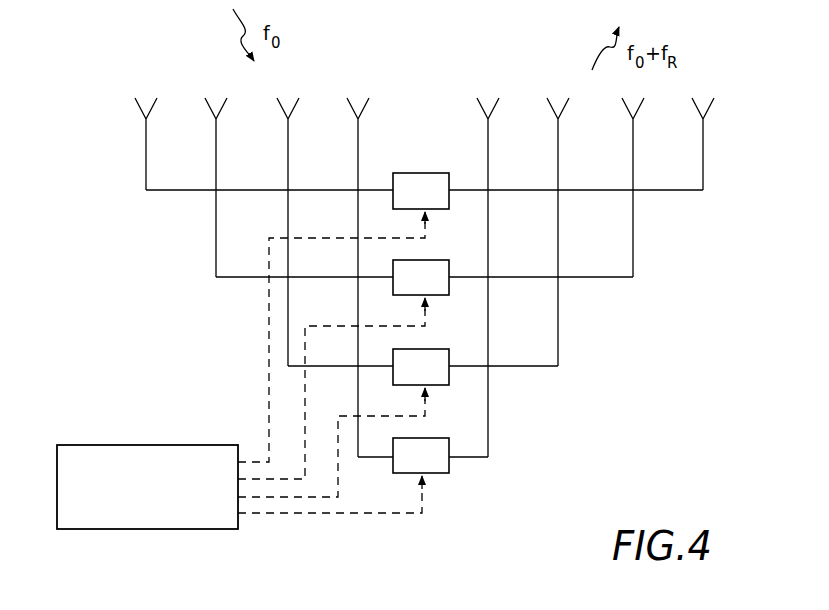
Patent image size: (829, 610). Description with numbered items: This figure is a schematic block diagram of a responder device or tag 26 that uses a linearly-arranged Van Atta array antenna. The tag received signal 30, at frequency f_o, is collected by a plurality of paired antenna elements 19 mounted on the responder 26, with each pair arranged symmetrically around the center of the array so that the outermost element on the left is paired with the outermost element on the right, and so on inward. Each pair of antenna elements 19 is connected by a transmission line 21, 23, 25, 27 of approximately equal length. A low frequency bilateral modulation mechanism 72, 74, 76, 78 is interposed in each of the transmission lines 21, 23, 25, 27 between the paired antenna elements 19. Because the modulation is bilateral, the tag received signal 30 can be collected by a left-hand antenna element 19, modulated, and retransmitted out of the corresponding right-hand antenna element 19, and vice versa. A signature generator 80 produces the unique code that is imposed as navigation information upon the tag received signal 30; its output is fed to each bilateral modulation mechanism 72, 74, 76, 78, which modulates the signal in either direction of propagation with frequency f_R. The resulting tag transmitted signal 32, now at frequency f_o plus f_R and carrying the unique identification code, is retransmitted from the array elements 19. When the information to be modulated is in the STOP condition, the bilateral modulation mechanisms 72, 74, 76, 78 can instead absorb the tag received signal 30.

The antenna element 19 is at (140, 111).
The transmission line 21 is at (152, 191).
The transmission line 23 is at (234, 278).
The transmission line 25 is at (293, 367).
The transmission line 27 is at (374, 458).
The responder device or tag 26 is at (445, 342).
The tag received signal 30 is at (233, 23).
The tag transmitted signal 32 is at (601, 50).
The bilateral modulation mechanism 72 is at (445, 211).
The bilateral modulation mechanism 74 is at (445, 297).
The bilateral modulation mechanism 76 is at (445, 387).
The bilateral modulation mechanism 78 is at (445, 475).
The signature generator 80 is at (205, 530).